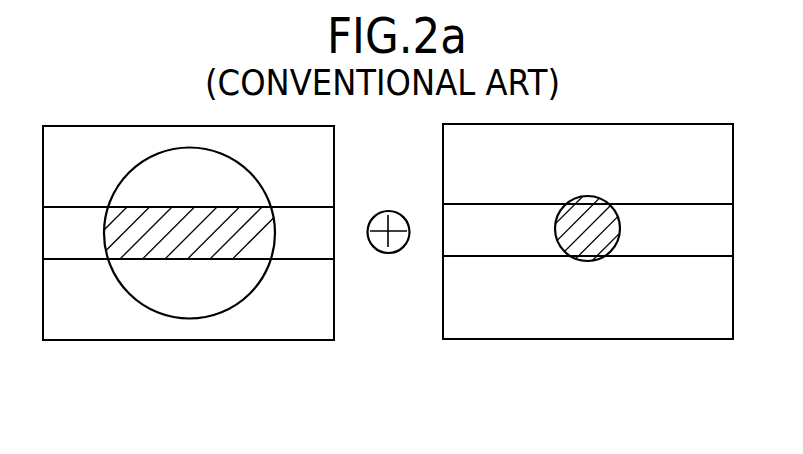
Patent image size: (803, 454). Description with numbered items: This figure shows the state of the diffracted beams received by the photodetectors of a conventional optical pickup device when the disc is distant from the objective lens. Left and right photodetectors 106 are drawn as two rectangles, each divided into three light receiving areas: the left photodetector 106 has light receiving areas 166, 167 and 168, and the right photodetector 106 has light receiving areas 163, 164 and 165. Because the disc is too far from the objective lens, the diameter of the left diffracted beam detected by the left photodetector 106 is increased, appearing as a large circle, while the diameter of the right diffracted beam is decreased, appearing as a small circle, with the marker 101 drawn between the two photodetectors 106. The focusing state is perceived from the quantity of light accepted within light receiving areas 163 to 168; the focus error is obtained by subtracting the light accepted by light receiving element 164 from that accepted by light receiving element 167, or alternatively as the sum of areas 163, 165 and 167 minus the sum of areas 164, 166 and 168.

The light spot / optical axis position 101 is at (380, 243).
The photodetector 106 is at (366, 276).
The light receiving area 163 is at (588, 164).
The light receiving element 164 is at (588, 230).
The light receiving area 165 is at (588, 297).
The light receiving area 166 is at (188, 166).
The light receiving element 167 is at (167, 233).
The light receiving area 168 is at (188, 299).